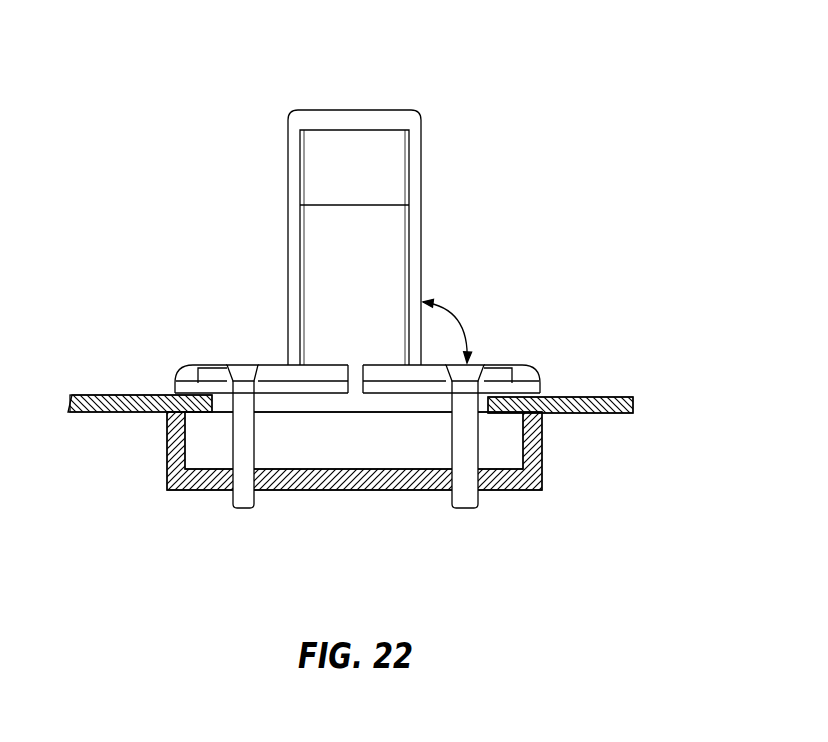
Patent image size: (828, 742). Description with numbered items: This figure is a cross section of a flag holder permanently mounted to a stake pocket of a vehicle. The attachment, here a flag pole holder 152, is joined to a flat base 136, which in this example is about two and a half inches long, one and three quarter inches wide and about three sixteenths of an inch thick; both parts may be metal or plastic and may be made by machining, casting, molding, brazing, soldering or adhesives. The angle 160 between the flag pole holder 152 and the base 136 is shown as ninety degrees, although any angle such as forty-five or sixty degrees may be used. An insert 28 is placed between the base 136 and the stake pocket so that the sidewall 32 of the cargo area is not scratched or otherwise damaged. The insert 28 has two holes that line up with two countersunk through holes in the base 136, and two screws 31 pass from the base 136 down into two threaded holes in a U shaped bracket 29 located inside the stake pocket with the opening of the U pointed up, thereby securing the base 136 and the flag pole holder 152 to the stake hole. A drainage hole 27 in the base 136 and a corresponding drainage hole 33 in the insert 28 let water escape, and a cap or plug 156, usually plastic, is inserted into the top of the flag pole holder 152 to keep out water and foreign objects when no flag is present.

The cap or plug 156 is at (365, 140).
The flag pole holder 152 is at (414, 209).
The angle 160 is at (461, 326).
The base 136 is at (275, 377).
The drainage hole 27 is at (357, 392).
The insert 28 is at (178, 384).
The drainage hole 33 is at (355, 392).
The sidewall 32 is at (95, 413).
The U shaped bracket 29 is at (178, 484).
The screws 31 is at (243, 502).